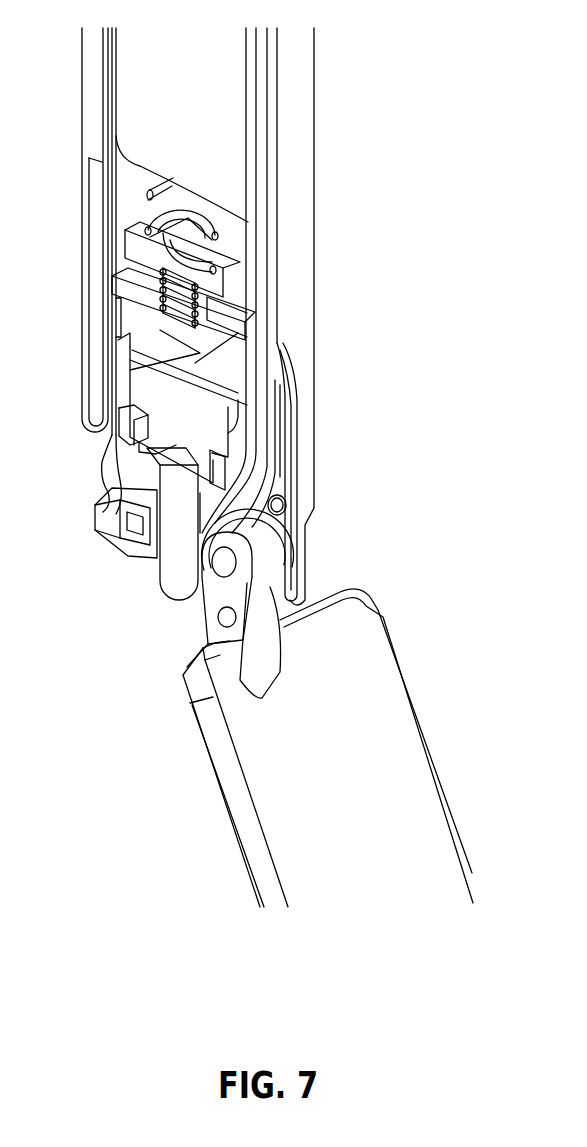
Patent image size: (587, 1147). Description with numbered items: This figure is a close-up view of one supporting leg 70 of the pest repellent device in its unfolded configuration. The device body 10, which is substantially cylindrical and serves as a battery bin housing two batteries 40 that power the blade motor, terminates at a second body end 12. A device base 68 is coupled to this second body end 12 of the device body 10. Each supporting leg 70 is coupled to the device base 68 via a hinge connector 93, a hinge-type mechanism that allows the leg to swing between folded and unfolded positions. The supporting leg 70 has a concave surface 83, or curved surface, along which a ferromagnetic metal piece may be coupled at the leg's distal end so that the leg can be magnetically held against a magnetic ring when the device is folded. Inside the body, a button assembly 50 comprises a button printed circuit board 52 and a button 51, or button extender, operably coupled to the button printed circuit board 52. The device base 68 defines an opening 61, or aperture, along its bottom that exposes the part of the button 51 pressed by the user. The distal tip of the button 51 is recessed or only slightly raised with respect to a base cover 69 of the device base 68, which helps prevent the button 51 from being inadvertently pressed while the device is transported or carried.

The batteries 40 is at (220, 138).
The device body 10 is at (287, 258).
The second body end 12 is at (321, 434).
The button printed circuit board 52 is at (115, 353).
The button assembly 50 is at (136, 418).
The device base 68 is at (103, 477).
The base cover 69 is at (122, 543).
The opening 61 is at (153, 565).
The button 51 is at (172, 590).
The hinge connector 93 is at (282, 566).
The supporting leg 70 is at (378, 698).
The concave surface 83 is at (294, 797).